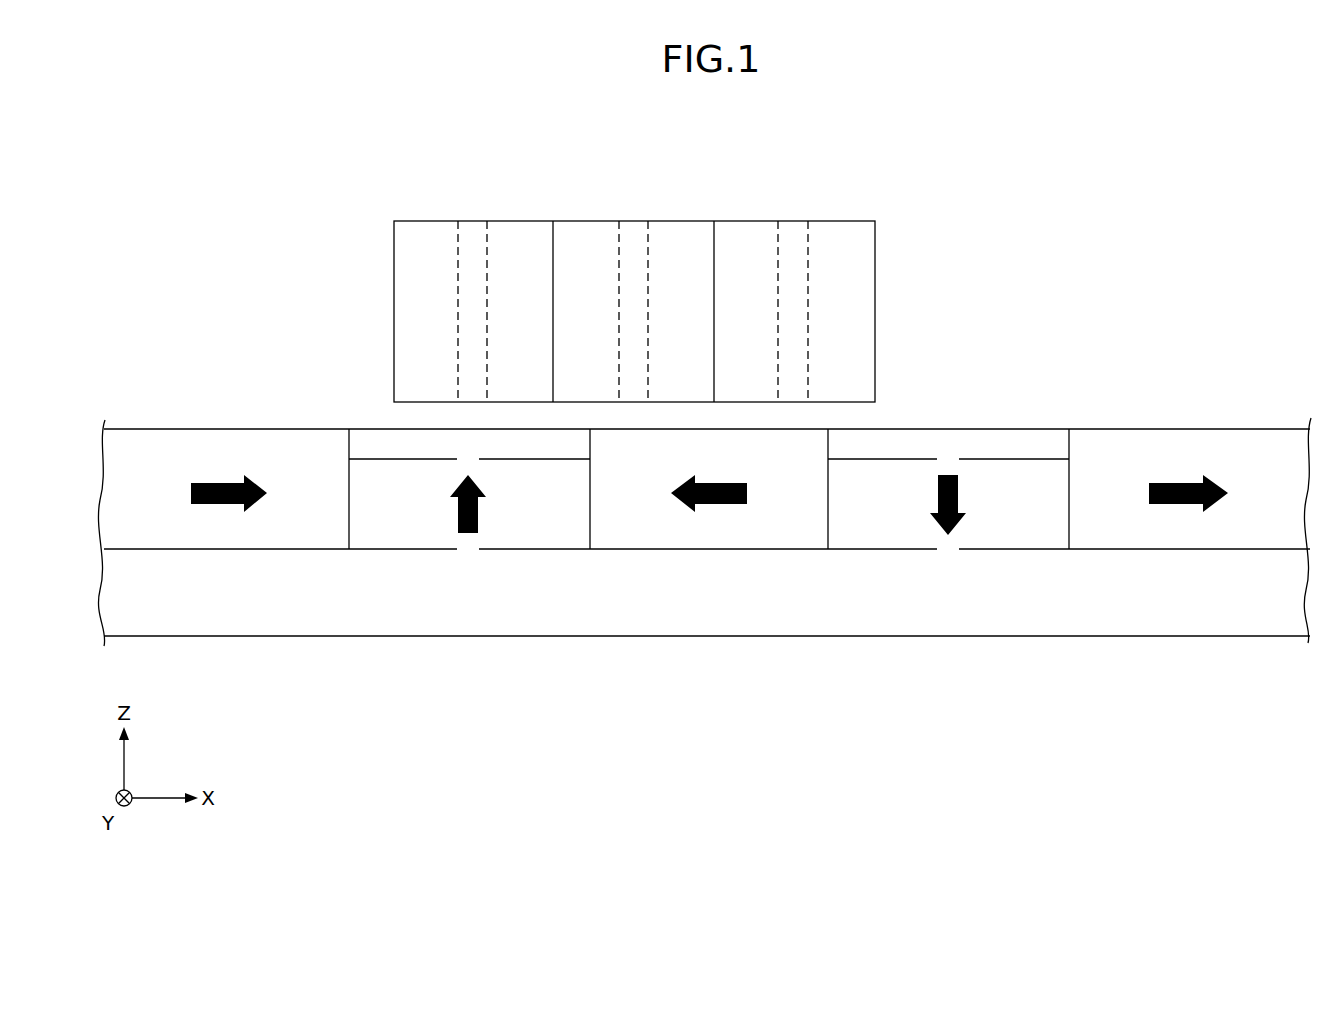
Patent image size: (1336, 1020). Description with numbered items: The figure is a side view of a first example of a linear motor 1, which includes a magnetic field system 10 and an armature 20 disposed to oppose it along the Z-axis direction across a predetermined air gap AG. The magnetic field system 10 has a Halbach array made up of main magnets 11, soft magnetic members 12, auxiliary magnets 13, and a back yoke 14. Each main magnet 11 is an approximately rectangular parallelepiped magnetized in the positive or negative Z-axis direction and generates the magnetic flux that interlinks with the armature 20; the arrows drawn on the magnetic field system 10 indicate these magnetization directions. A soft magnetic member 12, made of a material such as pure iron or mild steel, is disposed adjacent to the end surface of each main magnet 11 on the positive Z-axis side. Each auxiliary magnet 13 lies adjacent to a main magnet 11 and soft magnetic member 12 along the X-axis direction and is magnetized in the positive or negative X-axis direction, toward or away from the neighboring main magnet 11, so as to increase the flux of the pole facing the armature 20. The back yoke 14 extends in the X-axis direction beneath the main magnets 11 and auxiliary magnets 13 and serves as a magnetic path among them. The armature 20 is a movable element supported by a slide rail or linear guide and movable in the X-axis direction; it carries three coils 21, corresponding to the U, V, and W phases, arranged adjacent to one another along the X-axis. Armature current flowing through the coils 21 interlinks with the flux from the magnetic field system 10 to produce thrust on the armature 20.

The linear motor 1 is at (153, 131).
The magnetic field system 10 is at (140, 390).
The main magnet 11 is at (388, 530).
The soft magnetic member 12 is at (363, 439).
The auxiliary magnet 13 is at (224, 530).
The back yoke 14 is at (447, 614).
The armature 20 is at (362, 211).
The coil 21 is at (751, 238).
The air gap AG is at (890, 410).